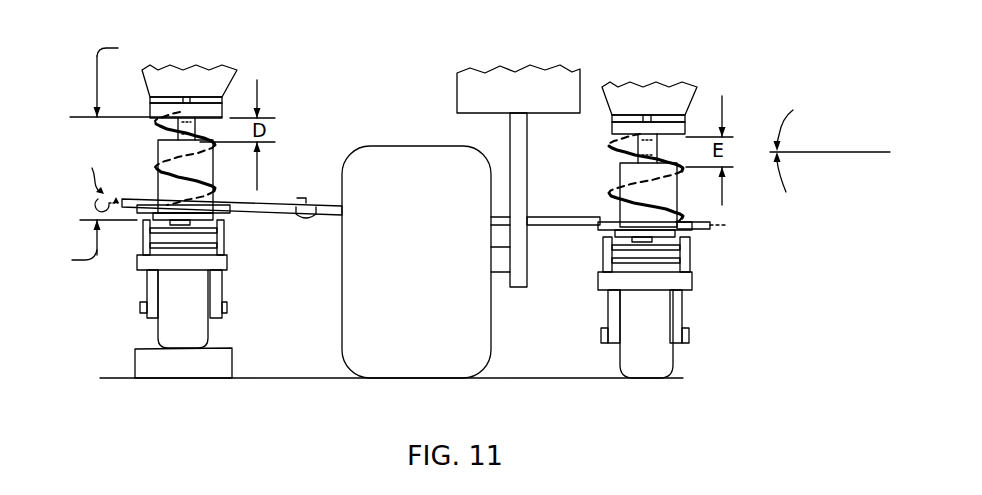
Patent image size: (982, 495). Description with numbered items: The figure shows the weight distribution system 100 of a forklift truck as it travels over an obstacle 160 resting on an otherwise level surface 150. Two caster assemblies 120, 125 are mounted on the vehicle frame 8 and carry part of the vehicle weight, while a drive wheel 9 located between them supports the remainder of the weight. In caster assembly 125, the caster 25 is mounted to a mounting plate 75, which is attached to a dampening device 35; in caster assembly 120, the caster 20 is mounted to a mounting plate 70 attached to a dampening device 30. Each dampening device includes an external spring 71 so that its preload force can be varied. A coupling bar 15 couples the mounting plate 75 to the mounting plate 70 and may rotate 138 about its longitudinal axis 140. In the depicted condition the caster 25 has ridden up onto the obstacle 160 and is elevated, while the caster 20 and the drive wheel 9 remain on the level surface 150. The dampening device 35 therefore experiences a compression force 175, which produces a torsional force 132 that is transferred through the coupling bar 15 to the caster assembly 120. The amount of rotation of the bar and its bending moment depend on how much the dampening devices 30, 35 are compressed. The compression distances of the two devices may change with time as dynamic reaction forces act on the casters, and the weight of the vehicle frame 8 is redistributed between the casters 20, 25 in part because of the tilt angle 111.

The vehicle frame 8 is at (457, 97).
The drive wheel 9 is at (395, 147).
The coupling bar 15 is at (329, 215).
The caster 20 is at (670, 355).
The caster 25 is at (207, 290).
The dampening device 30 is at (591, 192).
The dampening device 35 is at (126, 125).
The mounting plate 70 is at (603, 237).
The external spring 71 is at (197, 158).
The mounting plate 75 is at (143, 215).
The weight distribution system 100 is at (325, 112).
The tilt angle 111 is at (807, 141).
The caster assembly 120 is at (731, 284).
The caster assembly 125 is at (252, 321).
The torsional force 132 is at (312, 216).
The rotation 138 is at (88, 168).
The longitudinal axis 140 is at (93, 200).
The level surface 150 is at (593, 388).
The obstacle 160 is at (137, 358).
The compression force 175 is at (96, 154).